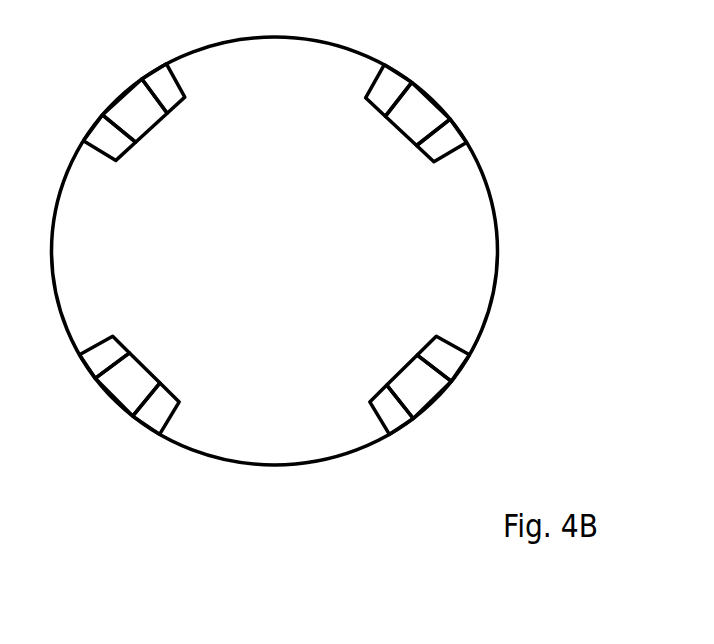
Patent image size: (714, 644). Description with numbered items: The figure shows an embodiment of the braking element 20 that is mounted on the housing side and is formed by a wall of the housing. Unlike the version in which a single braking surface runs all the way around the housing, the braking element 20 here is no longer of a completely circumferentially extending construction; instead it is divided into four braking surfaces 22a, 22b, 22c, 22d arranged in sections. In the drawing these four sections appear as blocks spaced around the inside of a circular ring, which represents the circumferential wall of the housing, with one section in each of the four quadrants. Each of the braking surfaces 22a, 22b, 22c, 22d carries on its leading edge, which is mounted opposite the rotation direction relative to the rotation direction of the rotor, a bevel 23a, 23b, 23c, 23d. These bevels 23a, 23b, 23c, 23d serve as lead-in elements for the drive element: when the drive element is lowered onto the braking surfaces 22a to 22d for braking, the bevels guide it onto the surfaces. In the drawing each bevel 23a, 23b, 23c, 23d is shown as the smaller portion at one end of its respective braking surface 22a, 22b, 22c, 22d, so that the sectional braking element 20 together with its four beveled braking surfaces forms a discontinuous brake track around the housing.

The braking element 20 is at (413, 98).
The braking surface 22a is at (142, 118).
The braking surface 22b is at (415, 117).
The braking surface 22c is at (420, 373).
The braking surface 22d is at (140, 377).
The bevel 23a is at (117, 146).
The bevel 23b is at (382, 92).
The bevel 23c is at (448, 353).
The bevel 23d is at (170, 408).